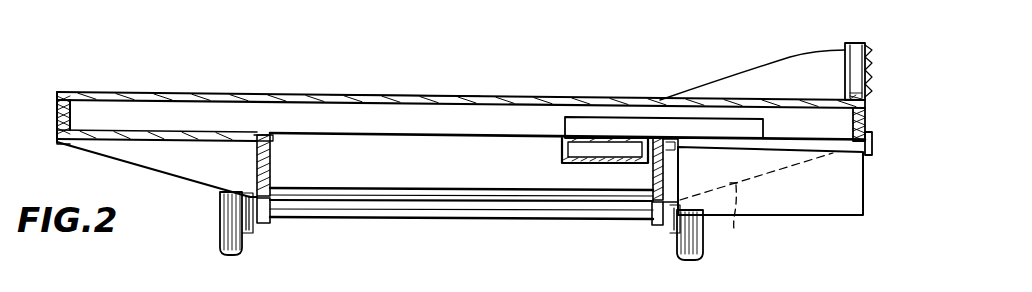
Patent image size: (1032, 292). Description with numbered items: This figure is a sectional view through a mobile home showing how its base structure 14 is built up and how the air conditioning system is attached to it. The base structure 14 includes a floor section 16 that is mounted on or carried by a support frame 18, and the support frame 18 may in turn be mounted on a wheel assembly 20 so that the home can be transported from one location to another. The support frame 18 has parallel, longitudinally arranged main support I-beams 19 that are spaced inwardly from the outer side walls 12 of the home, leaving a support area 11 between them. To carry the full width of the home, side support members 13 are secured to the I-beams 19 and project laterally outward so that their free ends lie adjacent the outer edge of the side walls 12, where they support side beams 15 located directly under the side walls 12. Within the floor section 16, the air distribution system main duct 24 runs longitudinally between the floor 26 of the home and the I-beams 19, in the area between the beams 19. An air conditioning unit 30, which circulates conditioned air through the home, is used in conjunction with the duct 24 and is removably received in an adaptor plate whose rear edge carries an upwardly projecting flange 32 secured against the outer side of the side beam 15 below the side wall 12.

The support area 11 is at (720, 175).
The side walls 12 is at (855, 40).
The side support members 13 is at (231, 169).
The base structure 14 is at (208, 80).
The side beams 15 is at (867, 118).
The floor section 16 is at (358, 86).
The support frame 18 is at (134, 178).
The main support I-beams 19 is at (270, 162).
The wheel assembly 20 is at (445, 227).
The air distribution system main duct 24 is at (562, 148).
The floor 26 is at (481, 96).
The air conditioning unit 30 is at (825, 217).
The upwardly projecting flange 32 is at (872, 141).